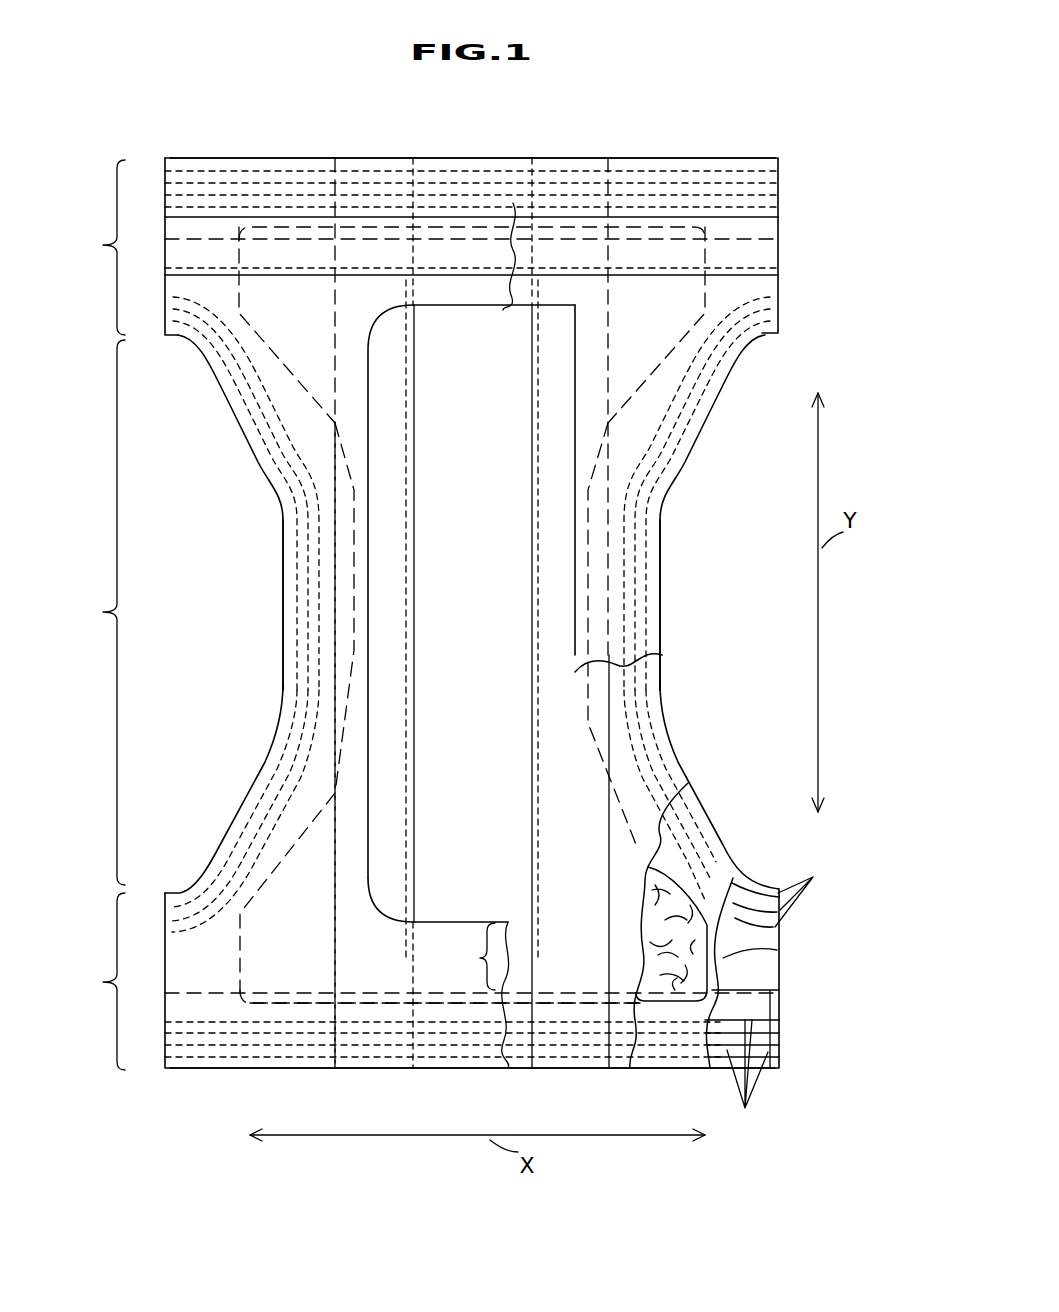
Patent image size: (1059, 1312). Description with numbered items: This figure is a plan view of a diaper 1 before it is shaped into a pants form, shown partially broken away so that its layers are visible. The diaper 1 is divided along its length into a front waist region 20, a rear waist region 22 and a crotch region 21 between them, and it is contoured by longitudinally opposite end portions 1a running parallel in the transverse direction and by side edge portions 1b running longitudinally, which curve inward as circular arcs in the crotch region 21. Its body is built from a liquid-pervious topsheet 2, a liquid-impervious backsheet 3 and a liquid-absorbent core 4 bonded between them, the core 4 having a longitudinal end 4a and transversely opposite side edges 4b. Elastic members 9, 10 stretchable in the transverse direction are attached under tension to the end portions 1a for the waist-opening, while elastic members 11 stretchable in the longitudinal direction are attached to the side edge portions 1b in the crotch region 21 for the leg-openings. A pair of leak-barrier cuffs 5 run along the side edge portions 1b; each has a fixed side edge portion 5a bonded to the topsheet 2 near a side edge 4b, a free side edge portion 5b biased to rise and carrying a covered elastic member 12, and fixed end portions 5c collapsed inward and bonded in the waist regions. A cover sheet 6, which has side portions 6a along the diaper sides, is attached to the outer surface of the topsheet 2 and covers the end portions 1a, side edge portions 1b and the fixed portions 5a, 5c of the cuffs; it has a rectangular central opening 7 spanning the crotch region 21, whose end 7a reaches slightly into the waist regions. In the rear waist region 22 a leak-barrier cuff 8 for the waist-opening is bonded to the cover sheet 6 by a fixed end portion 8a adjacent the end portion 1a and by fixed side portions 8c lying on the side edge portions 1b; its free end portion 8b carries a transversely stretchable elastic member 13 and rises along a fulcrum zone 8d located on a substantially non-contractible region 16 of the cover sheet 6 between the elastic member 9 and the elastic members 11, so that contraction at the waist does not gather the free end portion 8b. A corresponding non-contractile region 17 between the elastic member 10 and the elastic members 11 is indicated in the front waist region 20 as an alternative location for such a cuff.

The diaper 1 is at (715, 72).
The end portions 1a is at (514, 158).
The side edge portions 1b is at (767, 302).
The topsheet 2 is at (628, 853).
The backsheet 3 is at (770, 970).
The liquid-absorbent core 4 is at (656, 950).
The longitudinal end of core 4a is at (618, 205).
The side edges of core 4b is at (360, 560).
The leak-barrier cuffs 5 is at (373, 650).
The fixed side edge portions 5a is at (343, 697).
The free side edge portions 5b is at (388, 505).
The fixed end portions 5c is at (373, 200).
The cover sheet 6 is at (437, 997).
The side portions 6a is at (666, 173).
The central opening 7 is at (513, 523).
The end of absorbent body 7a is at (510, 312).
The leak-barrier cuff 8 is at (720, 230).
The fixed end portion 8a is at (466, 233).
The free end portion 8b is at (455, 255).
The fixed side portions 8c is at (767, 230).
The fulcrum zone 8d is at (667, 225).
The elastic member 9 is at (240, 190).
The elastic member 10 is at (747, 1080).
The elastic members 11 is at (196, 412).
The elastic members 12 is at (535, 660).
The elastic member 13 is at (430, 280).
The non-contractible region 16 is at (494, 256).
The non-contractile region 17 is at (472, 956).
The front waist region 20 is at (96, 981).
The crotch region 21 is at (96, 612).
The rear waist region 22 is at (96, 247).